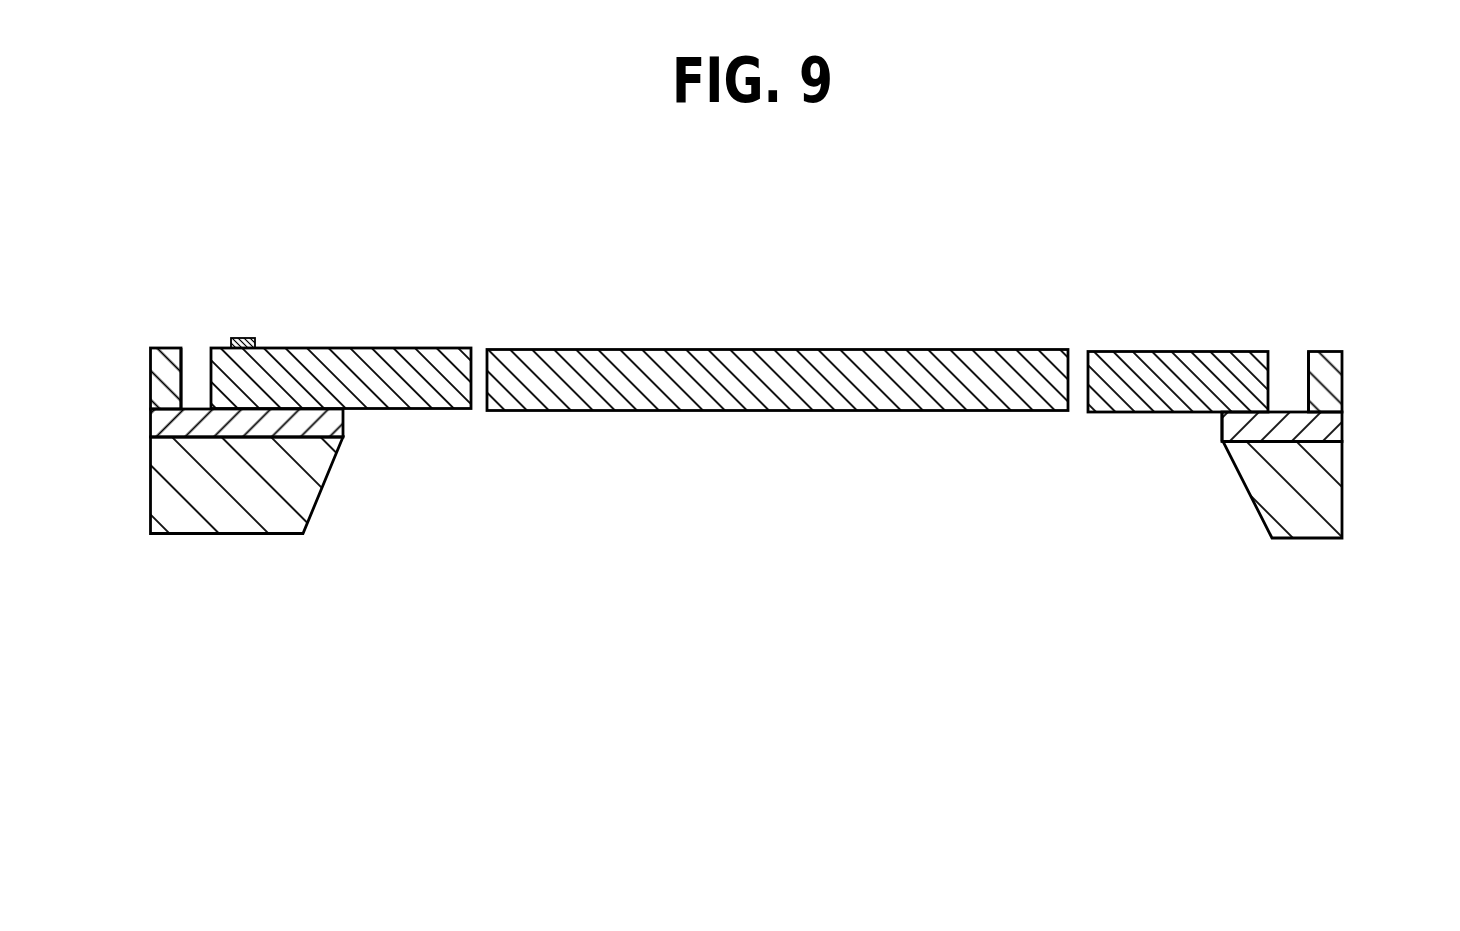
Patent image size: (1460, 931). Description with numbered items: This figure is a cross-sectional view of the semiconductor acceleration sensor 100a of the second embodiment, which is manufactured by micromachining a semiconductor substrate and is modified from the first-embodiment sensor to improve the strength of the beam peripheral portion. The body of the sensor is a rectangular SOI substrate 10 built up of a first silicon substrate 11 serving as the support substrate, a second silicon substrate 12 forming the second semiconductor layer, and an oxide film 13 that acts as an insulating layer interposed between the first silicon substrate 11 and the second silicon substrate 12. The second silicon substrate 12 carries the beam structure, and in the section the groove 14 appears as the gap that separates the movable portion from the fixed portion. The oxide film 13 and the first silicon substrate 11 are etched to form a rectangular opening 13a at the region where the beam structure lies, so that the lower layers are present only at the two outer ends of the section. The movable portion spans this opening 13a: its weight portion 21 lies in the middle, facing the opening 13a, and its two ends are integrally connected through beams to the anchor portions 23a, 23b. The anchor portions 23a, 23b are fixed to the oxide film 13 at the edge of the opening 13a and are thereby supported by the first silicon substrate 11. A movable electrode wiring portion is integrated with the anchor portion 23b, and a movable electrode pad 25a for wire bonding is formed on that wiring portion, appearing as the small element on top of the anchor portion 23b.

The semiconductor acceleration sensor 100a is at (1392, 253).
The SOI substrate 10 is at (1345, 512).
The first silicon substrate 11 is at (1343, 472).
The second silicon substrate 12 is at (1343, 377).
The oxide film 13 is at (1343, 421).
The opening 13a is at (1216, 431).
The groove 14 is at (197, 352).
The weight portion 21 is at (743, 349).
The anchor portion 23a is at (1172, 351).
The anchor portion 23b is at (403, 348).
The movable electrode pad 25a is at (237, 338).